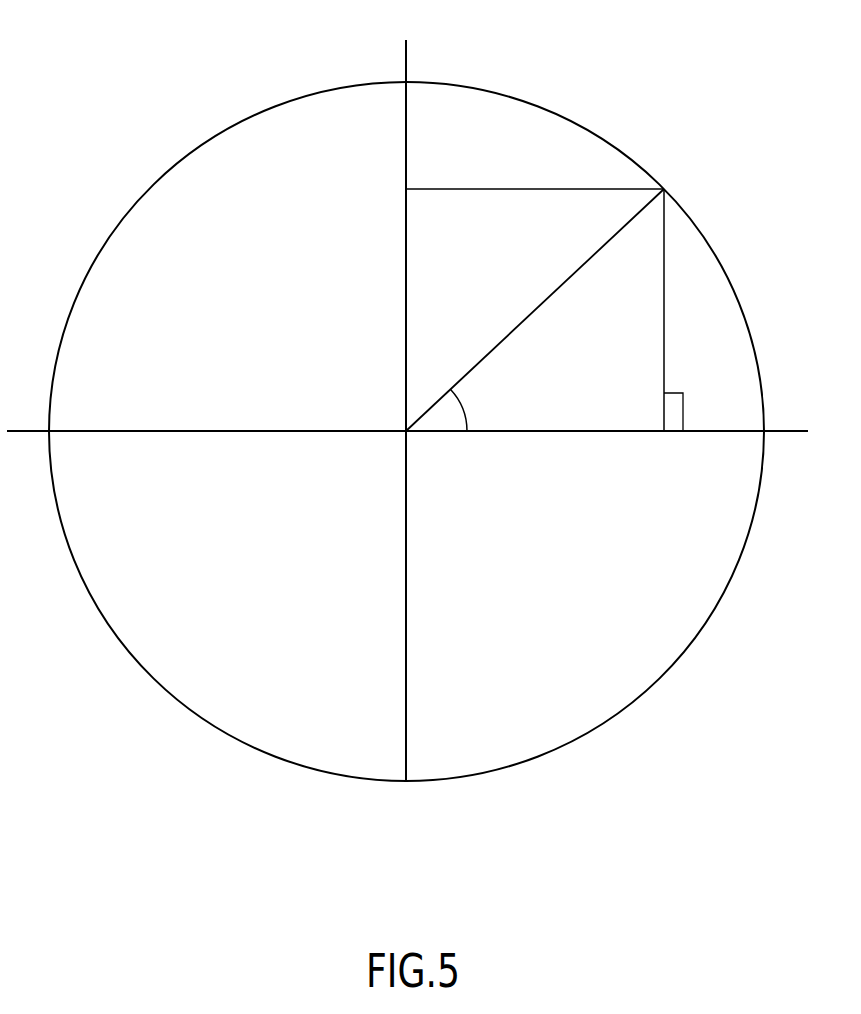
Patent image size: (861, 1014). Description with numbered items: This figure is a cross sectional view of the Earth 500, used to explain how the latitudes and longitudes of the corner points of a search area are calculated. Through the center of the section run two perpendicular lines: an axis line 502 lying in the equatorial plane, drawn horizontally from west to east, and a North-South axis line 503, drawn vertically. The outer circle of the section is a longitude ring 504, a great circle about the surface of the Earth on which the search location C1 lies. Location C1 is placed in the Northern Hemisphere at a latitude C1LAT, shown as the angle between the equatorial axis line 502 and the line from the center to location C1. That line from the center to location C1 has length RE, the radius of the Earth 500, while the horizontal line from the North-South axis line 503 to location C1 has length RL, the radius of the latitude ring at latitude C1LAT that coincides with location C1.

The Earth 500 is at (408, 434).
The axis line lying in an equatorial plane 502 is at (283, 432).
The North-South axis line 503 is at (405, 138).
The longitude ring 504 is at (724, 262).
The location C1 is at (668, 187).
The latitude C1LAT is at (461, 405).
The radius of a latitude ring RL is at (508, 190).
The radius of the Earth RE is at (561, 287).